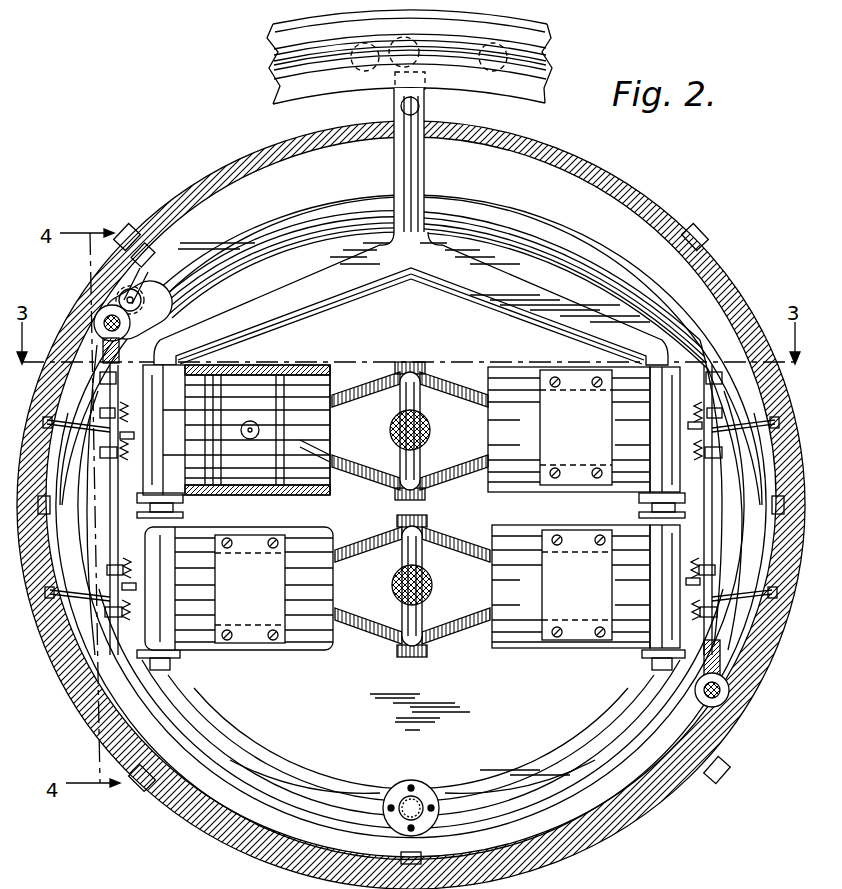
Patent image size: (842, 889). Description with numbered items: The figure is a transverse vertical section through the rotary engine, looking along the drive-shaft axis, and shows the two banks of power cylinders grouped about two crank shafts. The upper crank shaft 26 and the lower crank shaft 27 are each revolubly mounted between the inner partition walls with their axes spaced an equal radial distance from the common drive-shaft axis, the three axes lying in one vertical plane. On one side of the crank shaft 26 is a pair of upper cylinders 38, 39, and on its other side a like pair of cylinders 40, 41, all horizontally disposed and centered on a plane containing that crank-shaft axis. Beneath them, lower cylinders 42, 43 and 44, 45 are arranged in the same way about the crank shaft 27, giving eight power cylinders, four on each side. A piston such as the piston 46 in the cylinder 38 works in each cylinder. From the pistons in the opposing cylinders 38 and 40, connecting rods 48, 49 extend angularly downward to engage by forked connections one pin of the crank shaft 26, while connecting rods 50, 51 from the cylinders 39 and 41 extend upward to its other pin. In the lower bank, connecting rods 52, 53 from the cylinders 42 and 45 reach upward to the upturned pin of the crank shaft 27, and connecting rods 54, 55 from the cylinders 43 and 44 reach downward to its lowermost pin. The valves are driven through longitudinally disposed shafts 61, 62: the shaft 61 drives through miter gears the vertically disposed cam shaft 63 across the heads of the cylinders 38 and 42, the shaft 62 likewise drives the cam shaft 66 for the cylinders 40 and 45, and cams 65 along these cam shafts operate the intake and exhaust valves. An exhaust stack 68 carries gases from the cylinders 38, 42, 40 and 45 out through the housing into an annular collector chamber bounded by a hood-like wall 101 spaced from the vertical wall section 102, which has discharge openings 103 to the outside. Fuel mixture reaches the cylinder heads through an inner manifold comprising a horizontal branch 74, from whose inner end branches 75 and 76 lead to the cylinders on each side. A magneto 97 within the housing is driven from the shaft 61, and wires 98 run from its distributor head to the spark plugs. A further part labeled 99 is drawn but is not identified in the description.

The crank shaft 26 is at (431, 432).
The crank shaft 27 is at (434, 586).
The upper cylinder 38 is at (270, 372).
The upper cylinder 39 is at (323, 365).
The upper cylinder 40 is at (600, 378).
The upper cylinder 41 is at (505, 385).
The lower cylinder 42 is at (200, 632).
The lower cylinder 43 is at (305, 622).
The lower cylinder 44 is at (524, 642).
The lower cylinder 45 is at (625, 624).
The piston 46 is at (247, 375).
The connecting rod 48 is at (355, 470).
The connecting rod 49 is at (457, 470).
The connecting rod 50 is at (354, 397).
The connecting rod 51 is at (453, 397).
The connecting rod 52 is at (358, 548).
The connecting rod 53 is at (459, 548).
The connecting rod 54 is at (367, 626).
The connecting rod 55 is at (466, 626).
The shaft 61 is at (96, 316).
The shaft 62 is at (707, 703).
The cam shaft 63 is at (185, 510).
The cams 65 is at (125, 408).
The cam shaft 66 is at (648, 504).
The exhaust stack 68 is at (425, 156).
The branch 74 is at (420, 786).
The branch 75 is at (295, 776).
The branch 76 is at (553, 754).
The magneto 97 is at (170, 307).
The wires 98 is at (260, 240).
The springs 99 is at (121, 437).
The wall 101 is at (528, 92).
The vertical wall section 102 is at (538, 22).
The discharge openings 103 is at (350, 64).